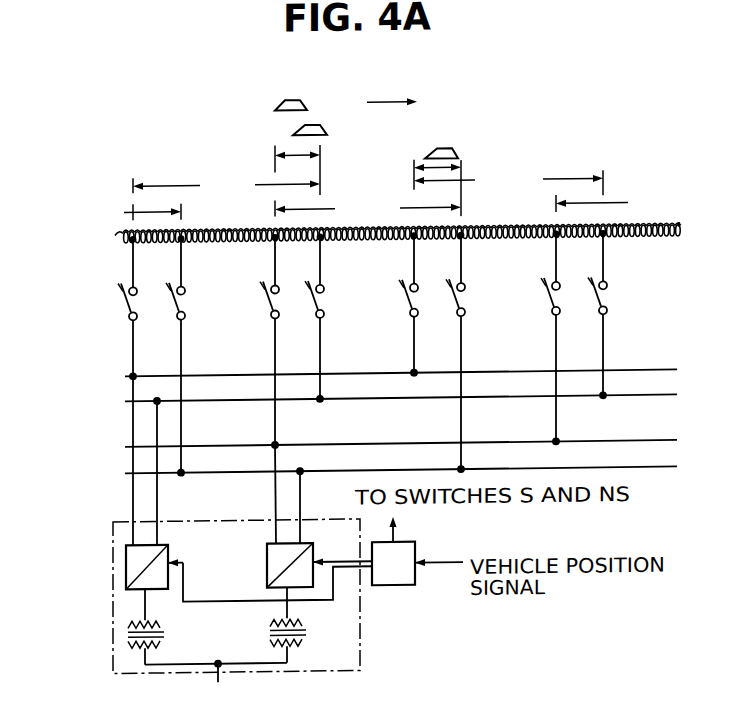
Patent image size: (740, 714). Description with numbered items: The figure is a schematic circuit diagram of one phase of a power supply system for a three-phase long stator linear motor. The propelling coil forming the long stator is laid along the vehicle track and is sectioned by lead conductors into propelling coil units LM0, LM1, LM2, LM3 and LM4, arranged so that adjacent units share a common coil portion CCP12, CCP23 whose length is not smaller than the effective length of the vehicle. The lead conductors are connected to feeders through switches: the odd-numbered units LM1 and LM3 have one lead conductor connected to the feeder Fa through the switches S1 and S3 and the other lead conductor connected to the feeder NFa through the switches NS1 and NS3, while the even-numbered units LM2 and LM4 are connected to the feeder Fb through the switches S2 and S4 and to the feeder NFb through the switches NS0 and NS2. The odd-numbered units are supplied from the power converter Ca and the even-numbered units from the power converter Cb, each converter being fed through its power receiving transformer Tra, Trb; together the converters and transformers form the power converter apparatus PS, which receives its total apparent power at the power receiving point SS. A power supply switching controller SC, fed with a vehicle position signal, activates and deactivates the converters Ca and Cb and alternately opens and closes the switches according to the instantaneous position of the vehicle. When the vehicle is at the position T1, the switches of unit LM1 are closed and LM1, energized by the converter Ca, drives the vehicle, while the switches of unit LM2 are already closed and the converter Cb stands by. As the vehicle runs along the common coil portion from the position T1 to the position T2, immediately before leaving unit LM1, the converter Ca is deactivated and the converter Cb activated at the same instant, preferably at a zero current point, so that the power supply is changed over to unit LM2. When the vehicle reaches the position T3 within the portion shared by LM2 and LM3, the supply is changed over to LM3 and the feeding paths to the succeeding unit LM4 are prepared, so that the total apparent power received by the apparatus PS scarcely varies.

The vehicle position T1 is at (284, 103).
The vehicle position T2 is at (320, 130).
The vehicle position T3 is at (443, 154).
The common coil portion CCP12 is at (298, 156).
The common coil portion CCP23 is at (433, 172).
The propelling coil unit LM0 is at (124, 214).
The propelling coil unit LM1 is at (226, 175).
The propelling coil unit LM2 is at (368, 195).
The propelling coil unit LM3 is at (508, 182).
The propelling coil unit LM4 is at (620, 204).
The switch S1 is at (127, 306).
The switch S2 is at (270, 315).
The switch S3 is at (410, 315).
The switch S4 is at (552, 315).
The switch NS0 is at (185, 304).
The switch NS1 is at (324, 304).
The switch NS2 is at (465, 304).
The switch NS3 is at (607, 304).
The feeder Fa is at (116, 379).
The feeder NFa is at (118, 404).
The feeder Fb is at (116, 450).
The feeder NFb is at (118, 476).
The power converter Ca is at (168, 548).
The power converter Cb is at (313, 548).
The power receiving transformer Tra is at (166, 637).
The power receiving transformer Trb is at (308, 634).
The power supply switching controller SC is at (417, 569).
The power converter apparatus PS is at (360, 655).
The power receiving point SS is at (216, 687).